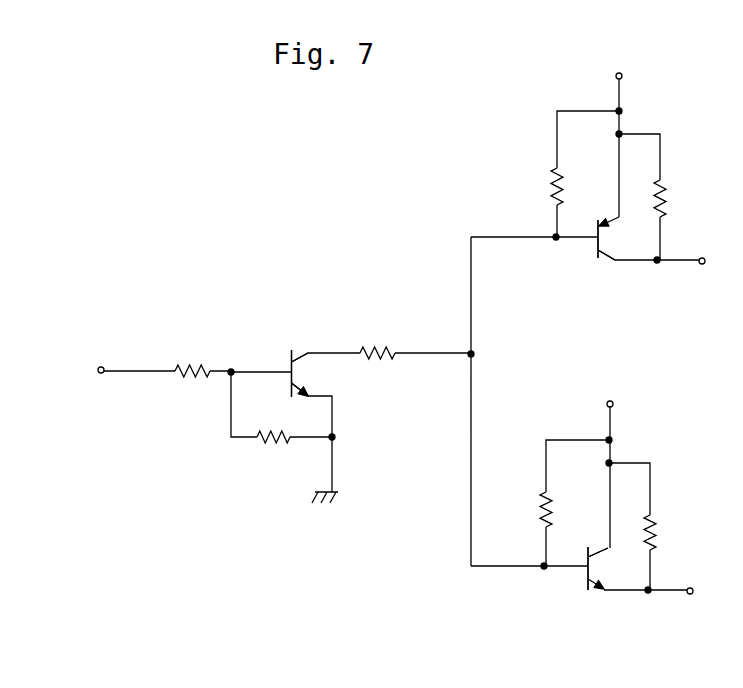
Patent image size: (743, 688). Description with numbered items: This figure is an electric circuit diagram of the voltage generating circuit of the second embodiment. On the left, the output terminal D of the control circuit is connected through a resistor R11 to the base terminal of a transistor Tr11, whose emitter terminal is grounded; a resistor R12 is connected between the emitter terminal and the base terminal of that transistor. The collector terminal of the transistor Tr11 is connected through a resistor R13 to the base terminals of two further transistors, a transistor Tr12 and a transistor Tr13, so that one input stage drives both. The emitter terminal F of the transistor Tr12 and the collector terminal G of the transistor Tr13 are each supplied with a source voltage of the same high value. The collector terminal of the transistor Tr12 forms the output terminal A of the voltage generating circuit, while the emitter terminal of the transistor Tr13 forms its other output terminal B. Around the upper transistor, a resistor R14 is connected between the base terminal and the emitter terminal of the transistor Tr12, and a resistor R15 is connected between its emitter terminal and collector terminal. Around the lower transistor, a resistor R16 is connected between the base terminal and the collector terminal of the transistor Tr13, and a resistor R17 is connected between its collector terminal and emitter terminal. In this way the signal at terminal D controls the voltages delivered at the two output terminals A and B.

The output terminal of the control circuit D is at (100, 374).
The resistor R11 is at (182, 376).
The transistor Tr11 is at (290, 362).
The resistor R12 is at (267, 441).
The resistor R13 is at (363, 349).
The emitter terminal of transistor Tr12 F is at (623, 73).
The resistor R14 is at (553, 172).
The resistor R15 is at (663, 196).
The transistor Tr12 is at (595, 248).
The output terminal of the voltage generating circuit A is at (704, 265).
The collector terminal of transistor Tr13 G is at (613, 401).
The resistor R16 is at (542, 498).
The resistor R17 is at (658, 540).
The transistor Tr13 is at (585, 582).
The output terminal of the voltage generating circuit B is at (693, 594).